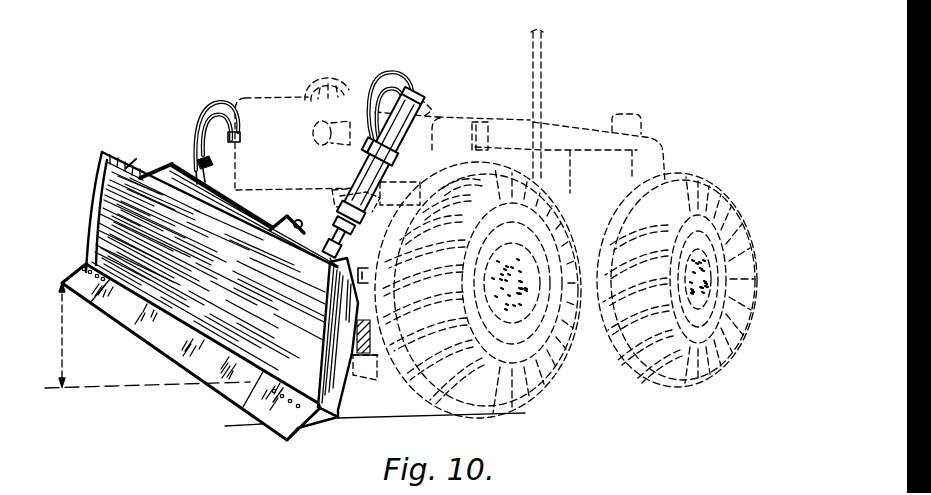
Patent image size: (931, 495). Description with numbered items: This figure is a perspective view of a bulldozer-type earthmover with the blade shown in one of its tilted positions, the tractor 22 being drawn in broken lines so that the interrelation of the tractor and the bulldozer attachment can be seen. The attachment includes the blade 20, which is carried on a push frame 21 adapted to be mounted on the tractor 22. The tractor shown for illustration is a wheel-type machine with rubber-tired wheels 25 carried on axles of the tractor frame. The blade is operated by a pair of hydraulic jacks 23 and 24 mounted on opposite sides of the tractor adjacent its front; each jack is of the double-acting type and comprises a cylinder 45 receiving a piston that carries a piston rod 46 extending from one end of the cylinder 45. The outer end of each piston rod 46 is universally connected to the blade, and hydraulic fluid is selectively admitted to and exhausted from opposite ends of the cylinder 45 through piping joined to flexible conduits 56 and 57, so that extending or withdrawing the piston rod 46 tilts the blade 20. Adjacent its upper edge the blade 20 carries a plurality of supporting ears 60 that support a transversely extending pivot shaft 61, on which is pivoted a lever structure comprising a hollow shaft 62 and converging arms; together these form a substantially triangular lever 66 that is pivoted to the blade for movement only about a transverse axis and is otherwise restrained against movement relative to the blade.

The blade 20 is at (115, 197).
The push frame 21 is at (368, 341).
The tractor 22 is at (560, 122).
The hydraulic jack 23 is at (195, 166).
The hydraulic jack 24 is at (430, 130).
The rubber-tired wheel 25 is at (625, 376).
The cylinder 45 is at (420, 96).
The piston rod 46 is at (342, 250).
The flexible conduit 56 is at (203, 130).
The flexible conduit 57 is at (219, 108).
The supporting ear 60 is at (152, 166).
The pivot shaft 61 is at (298, 229).
The hollow shaft 62 is at (252, 200).
The triangular lever 66 is at (130, 170).